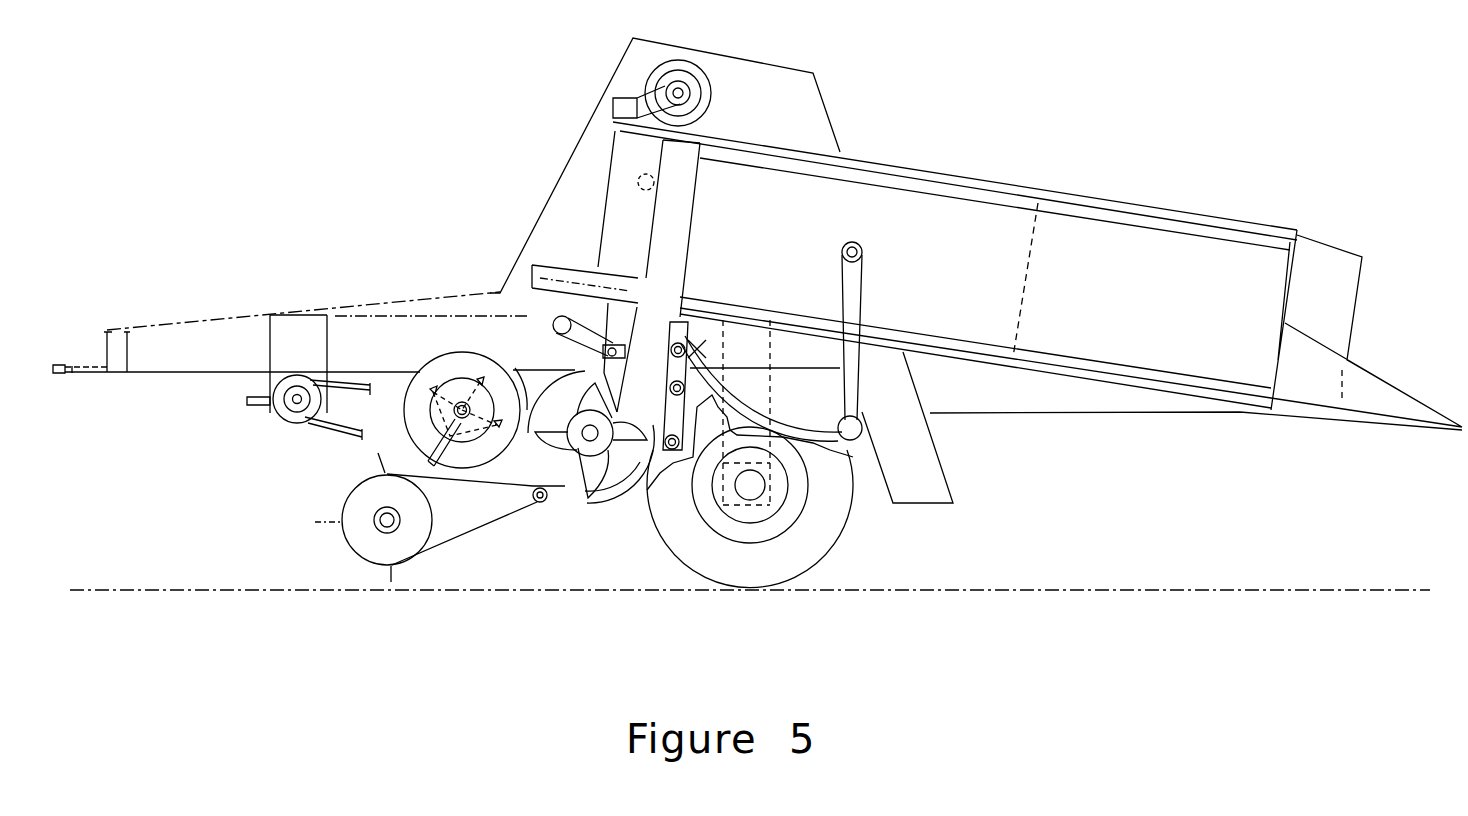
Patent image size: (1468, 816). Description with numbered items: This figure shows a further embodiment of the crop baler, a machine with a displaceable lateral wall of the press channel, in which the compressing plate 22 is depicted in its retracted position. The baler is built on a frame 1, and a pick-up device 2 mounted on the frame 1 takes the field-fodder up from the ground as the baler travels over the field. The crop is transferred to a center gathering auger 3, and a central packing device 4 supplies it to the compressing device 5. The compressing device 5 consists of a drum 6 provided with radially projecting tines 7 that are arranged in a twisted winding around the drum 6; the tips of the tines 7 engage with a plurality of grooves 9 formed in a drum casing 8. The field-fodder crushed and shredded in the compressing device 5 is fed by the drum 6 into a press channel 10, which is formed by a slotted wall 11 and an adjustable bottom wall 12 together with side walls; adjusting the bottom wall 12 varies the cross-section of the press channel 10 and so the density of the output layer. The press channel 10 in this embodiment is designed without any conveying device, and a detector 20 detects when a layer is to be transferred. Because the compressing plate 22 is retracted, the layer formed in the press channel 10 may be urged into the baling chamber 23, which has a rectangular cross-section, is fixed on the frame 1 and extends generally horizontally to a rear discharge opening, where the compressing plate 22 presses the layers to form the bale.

The frame 1 is at (343, 330).
The pick-up device 2 is at (365, 552).
The center gathering auger 3 is at (467, 457).
The central packing device 4 is at (503, 423).
The compressing device 5 is at (490, 282).
The drum 6 is at (580, 460).
The tines 7 is at (595, 480).
The drum casing 8 is at (612, 497).
The grooves 9 is at (628, 488).
The press channel 10 is at (657, 374).
The slotted wall 11 is at (587, 372).
The adjustable bottom wall 12 is at (686, 362).
The detector 20 is at (639, 167).
The compressing plate 22 is at (615, 202).
The baling chamber 23 is at (960, 186).